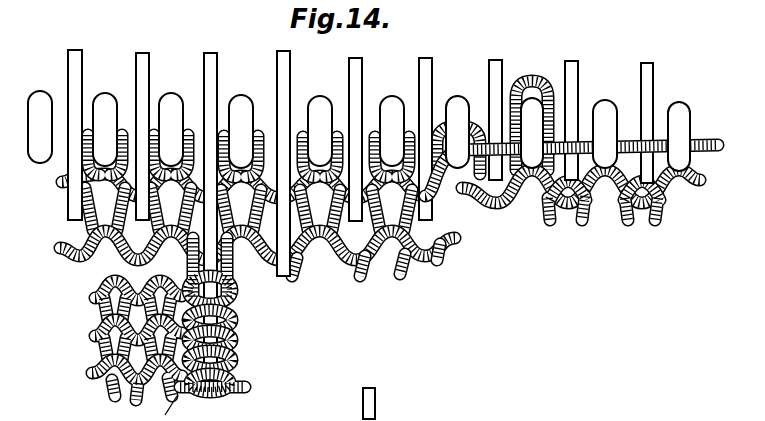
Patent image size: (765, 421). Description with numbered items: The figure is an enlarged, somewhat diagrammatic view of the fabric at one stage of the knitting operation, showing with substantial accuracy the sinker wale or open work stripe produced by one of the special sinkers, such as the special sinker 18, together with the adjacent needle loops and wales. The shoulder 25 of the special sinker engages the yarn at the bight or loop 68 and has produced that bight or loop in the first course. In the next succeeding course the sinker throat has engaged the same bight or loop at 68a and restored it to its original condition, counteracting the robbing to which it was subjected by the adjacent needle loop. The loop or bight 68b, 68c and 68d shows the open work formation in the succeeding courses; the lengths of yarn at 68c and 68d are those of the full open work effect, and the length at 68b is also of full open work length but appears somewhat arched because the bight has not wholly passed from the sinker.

The special sinker 18 is at (212, 91).
The shoulder 25 is at (100, 294).
The bight or loop 68 is at (250, 280).
The bight or loop 68a is at (255, 312).
The loop or bight 68b is at (250, 337).
The loop or bight 68c is at (250, 358).
The loop or bight 68d is at (250, 393).